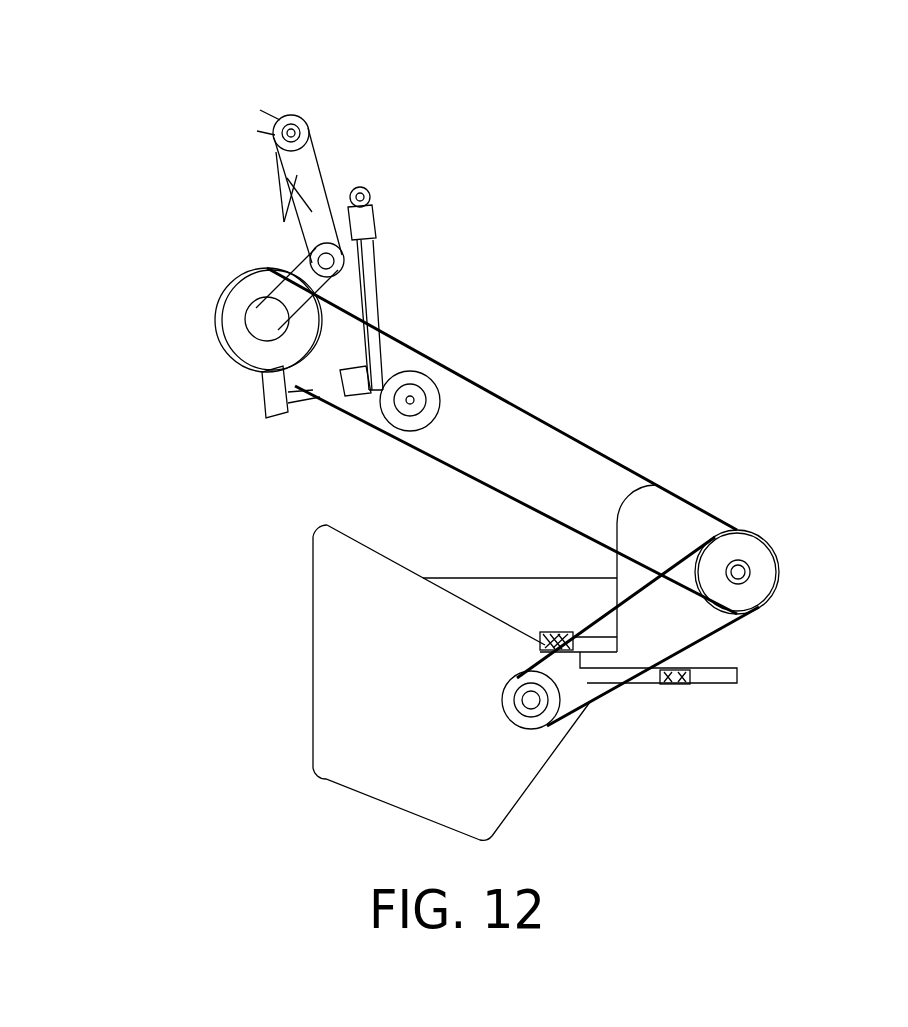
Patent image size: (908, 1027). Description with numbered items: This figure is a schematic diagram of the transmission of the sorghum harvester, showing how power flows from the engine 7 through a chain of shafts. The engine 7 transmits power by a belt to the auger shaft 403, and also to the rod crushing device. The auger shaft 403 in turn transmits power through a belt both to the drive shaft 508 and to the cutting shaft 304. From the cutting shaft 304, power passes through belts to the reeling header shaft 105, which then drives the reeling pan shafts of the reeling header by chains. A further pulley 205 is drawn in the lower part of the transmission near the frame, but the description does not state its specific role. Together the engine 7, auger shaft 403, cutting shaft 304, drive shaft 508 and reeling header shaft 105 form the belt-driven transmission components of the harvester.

The reeling header shaft 105 is at (300, 117).
The cutting shaft 304 is at (367, 210).
The auger shaft 403 is at (265, 318).
The drive shaft 508 is at (412, 400).
The engine 7 is at (746, 562).
The lower pulley 205 is at (530, 700).